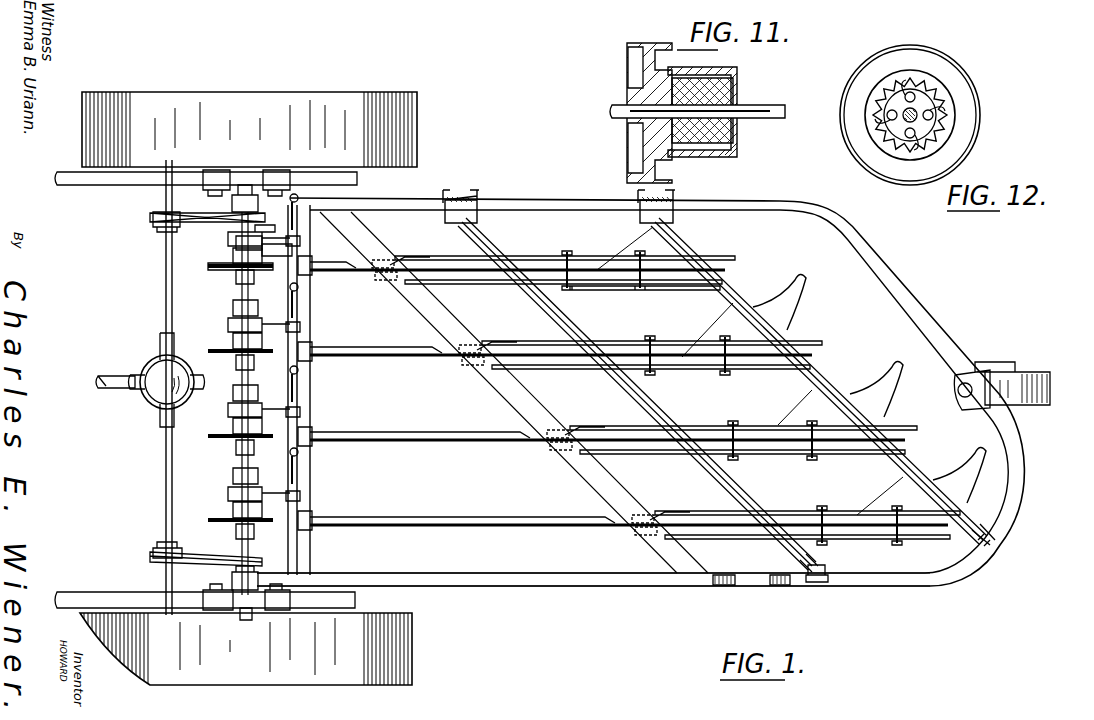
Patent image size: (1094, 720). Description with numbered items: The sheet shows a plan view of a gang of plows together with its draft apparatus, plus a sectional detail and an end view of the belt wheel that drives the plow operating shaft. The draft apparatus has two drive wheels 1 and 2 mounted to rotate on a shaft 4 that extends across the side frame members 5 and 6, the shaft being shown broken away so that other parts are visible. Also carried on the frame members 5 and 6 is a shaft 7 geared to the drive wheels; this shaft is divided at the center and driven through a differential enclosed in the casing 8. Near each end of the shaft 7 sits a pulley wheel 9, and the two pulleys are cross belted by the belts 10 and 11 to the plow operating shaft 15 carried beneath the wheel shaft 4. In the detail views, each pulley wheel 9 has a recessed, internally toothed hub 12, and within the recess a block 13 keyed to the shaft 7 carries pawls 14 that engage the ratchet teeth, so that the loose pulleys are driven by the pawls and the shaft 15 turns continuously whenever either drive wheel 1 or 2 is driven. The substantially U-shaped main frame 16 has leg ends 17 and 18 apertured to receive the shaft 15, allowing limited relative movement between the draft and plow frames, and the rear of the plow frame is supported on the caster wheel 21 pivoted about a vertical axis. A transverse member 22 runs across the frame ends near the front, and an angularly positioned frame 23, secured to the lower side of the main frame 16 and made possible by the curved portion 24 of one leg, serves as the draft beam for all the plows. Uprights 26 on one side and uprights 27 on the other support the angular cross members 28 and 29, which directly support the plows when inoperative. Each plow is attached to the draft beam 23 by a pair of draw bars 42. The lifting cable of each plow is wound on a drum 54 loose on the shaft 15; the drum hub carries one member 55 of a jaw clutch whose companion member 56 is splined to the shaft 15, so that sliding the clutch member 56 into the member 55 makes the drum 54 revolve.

In FIG. 1, the drive wheel 1 is at (420, 133).
In FIG. 1, the drive wheel 2 is at (400, 647).
In FIG. 1, the shaft 4 is at (246, 620).
In FIG. 1, the frame member 5 is at (120, 182).
In FIG. 1, the frame member 6 is at (100, 600).
In FIG. 1, the shaft 7 is at (166, 298).
In FIG. 11, the shaft 7 is at (772, 108).
In FIG. 1, the casing 8 is at (150, 380).
In FIG. 1, the pulley wheel 9 is at (150, 222).
In FIG. 11, the pulley wheel 9 is at (640, 43).
In FIG. 1, the belt 10 is at (200, 224).
In FIG. 1, the belt 11 is at (193, 548).
In FIG. 11, the hub 12 is at (738, 70).
In FIG. 12, the hub 12 is at (893, 78).
In FIG. 11, the block 13 is at (735, 130).
In FIG. 12, the block 13 is at (900, 125).
In FIG. 12, the pawl 14 is at (913, 85).
In FIG. 1, the plow operating shaft 15 is at (240, 298).
In FIG. 1, the main frame 16 is at (530, 210).
In FIG. 1, the end 17 is at (245, 193).
In FIG. 1, the end 18 is at (230, 580).
In FIG. 1, the caster wheel 21 is at (1050, 388).
In FIG. 1, the transverse member 22 is at (312, 382).
In FIG. 1, the angularly positioned frame 23 is at (505, 400).
In FIG. 1, the curved portion 24 is at (760, 590).
In FIG. 1, the upright 26 is at (818, 582).
In FIG. 1, the upright 27 is at (460, 190).
In FIG. 1, the cross member 28 is at (660, 416).
In FIG. 1, the cross member 29 is at (825, 380).
In FIG. 1, the draw bar 42 is at (500, 342).
In FIG. 1, the drum 54 is at (215, 268).
In FIG. 1, the jaw clutch member 55 is at (236, 255).
In FIG. 1, the jaw clutch member 56 is at (265, 248).